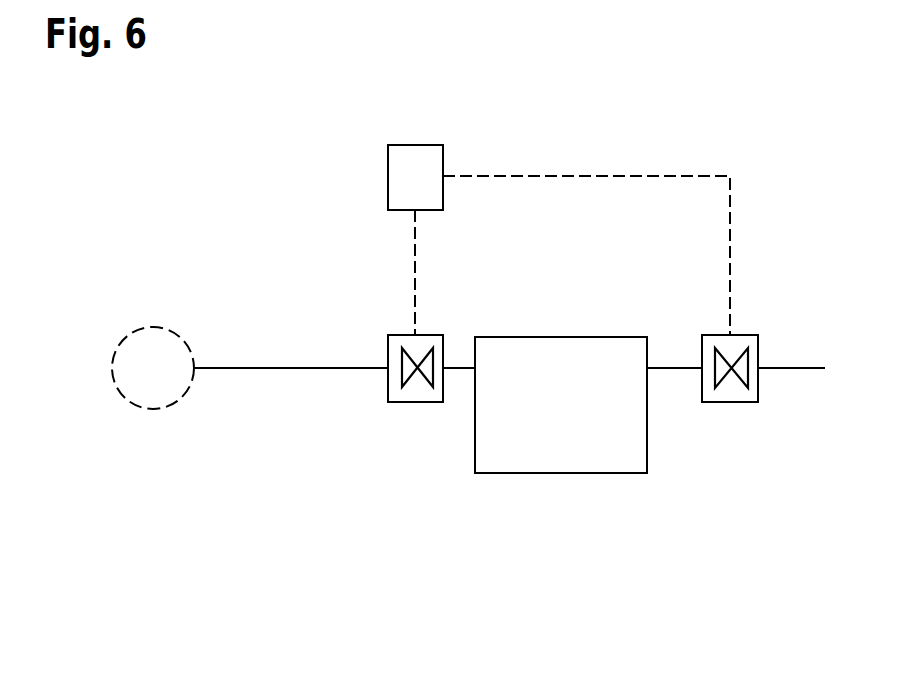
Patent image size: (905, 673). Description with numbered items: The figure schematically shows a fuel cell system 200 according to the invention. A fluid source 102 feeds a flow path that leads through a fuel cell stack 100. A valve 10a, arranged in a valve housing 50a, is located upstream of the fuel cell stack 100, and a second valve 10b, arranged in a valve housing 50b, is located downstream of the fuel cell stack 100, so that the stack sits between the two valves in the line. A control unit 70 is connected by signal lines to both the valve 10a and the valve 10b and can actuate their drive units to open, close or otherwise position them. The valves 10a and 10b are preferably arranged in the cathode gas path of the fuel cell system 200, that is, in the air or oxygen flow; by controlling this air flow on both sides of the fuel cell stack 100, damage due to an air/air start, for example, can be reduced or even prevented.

The fuel cell system 200 is at (140, 150).
The fluid source 102 is at (160, 328).
The control unit 70 is at (415, 145).
The fuel cell stack 100 is at (584, 305).
The valve 10a is at (429, 443).
The valve housing 50a is at (413, 402).
The valve 10b is at (745, 443).
The valve housing 50b is at (728, 402).